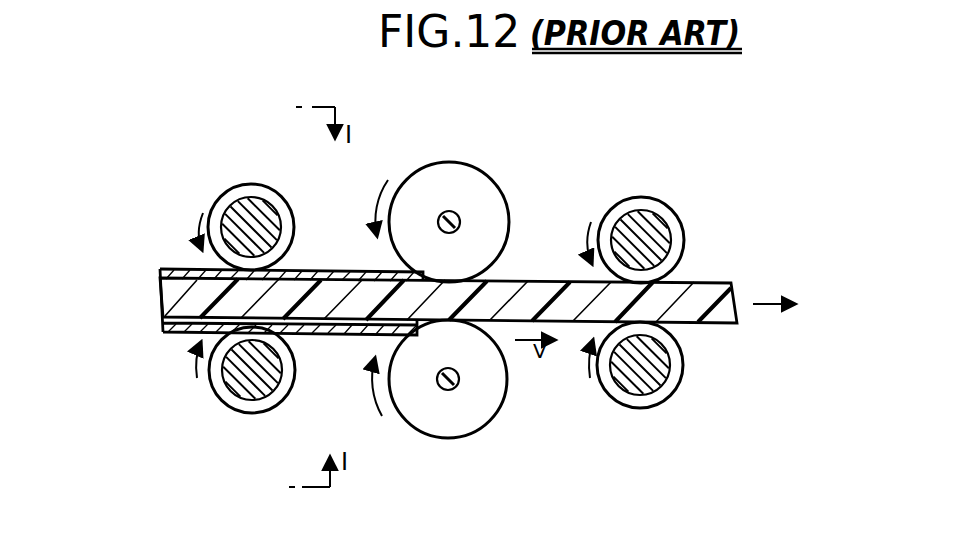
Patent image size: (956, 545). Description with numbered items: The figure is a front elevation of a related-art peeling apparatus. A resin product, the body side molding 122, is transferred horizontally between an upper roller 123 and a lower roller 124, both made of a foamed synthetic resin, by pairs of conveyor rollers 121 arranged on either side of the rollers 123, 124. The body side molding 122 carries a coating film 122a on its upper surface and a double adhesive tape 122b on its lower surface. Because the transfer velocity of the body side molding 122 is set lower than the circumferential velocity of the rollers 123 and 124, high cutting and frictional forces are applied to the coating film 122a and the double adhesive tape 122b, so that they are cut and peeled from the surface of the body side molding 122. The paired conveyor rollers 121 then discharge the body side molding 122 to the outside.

The conveyor rollers 121 is at (257, 205).
The body side molding 122 is at (166, 299).
The coating film 122a is at (168, 268).
The double adhesive tape 122b is at (170, 334).
The roller 123 is at (452, 178).
The roller 124 is at (449, 425).